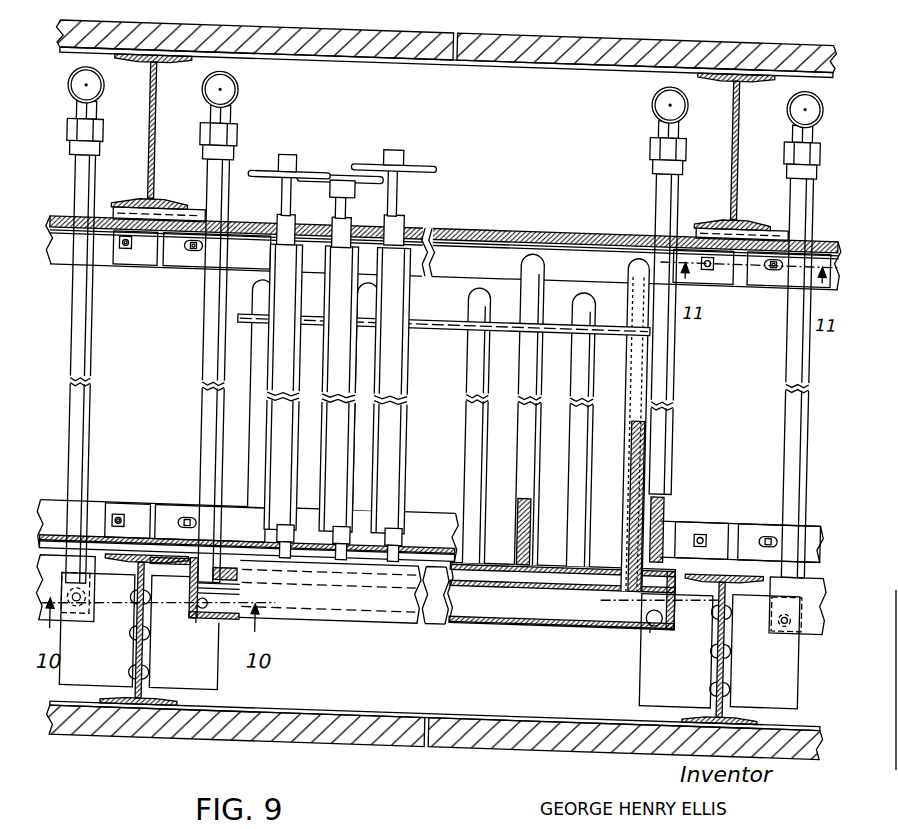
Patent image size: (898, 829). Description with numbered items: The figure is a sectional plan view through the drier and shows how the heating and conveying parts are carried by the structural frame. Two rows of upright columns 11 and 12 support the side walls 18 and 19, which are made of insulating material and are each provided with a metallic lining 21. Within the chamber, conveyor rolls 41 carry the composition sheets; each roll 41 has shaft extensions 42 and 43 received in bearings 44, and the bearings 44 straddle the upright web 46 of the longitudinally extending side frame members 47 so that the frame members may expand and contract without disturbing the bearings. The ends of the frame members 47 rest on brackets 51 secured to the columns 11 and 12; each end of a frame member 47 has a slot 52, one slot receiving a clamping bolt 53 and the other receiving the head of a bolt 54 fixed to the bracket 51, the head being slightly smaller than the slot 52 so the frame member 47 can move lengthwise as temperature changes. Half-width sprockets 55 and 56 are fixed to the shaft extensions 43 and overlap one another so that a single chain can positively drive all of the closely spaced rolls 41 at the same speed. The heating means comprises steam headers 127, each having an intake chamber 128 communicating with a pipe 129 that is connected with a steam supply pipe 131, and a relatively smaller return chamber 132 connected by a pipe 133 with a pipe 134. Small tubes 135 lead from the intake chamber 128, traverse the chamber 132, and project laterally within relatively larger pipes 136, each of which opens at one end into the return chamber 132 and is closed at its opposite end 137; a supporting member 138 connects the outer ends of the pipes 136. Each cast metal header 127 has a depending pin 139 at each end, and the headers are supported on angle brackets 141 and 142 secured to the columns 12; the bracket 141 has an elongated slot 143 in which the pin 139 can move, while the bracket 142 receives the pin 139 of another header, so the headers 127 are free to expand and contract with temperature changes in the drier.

The upright column 11 is at (160, 126).
The upright column 12 is at (127, 701).
The side wall 18 is at (398, 27).
The side wall 19 is at (402, 725).
The lining 21 is at (402, 49).
The roll 41 is at (288, 446).
The shaft extension 42 is at (293, 539).
The shaft extension 43 is at (294, 185).
The bearing 44 is at (301, 222).
The upright web 46 is at (494, 222).
The side frame member 47 is at (830, 213).
The bracket 51 is at (159, 277).
The slot 52 is at (125, 241).
The clamping bolt 53 is at (131, 254).
The bolt 54 is at (198, 252).
The sprocket 55 is at (384, 165).
The sprocket 56 is at (314, 162).
The steam header 127 is at (96, 609).
The intake chamber 128 is at (479, 603).
The pipe 129 is at (214, 396).
The steam supply pipe 131 is at (241, 82).
The chamber 132 is at (573, 566).
The pipe 133 is at (96, 356).
The pipe 134 is at (107, 82).
The small tube 135 is at (530, 521).
The pipe 136 is at (262, 421).
The closed end 137 is at (634, 237).
The supporting member 138 is at (464, 310).
The depending pin 139 is at (94, 587).
The angle bracket 141 is at (108, 669).
The angle bracket 142 is at (219, 665).
The slot 143 is at (104, 600).